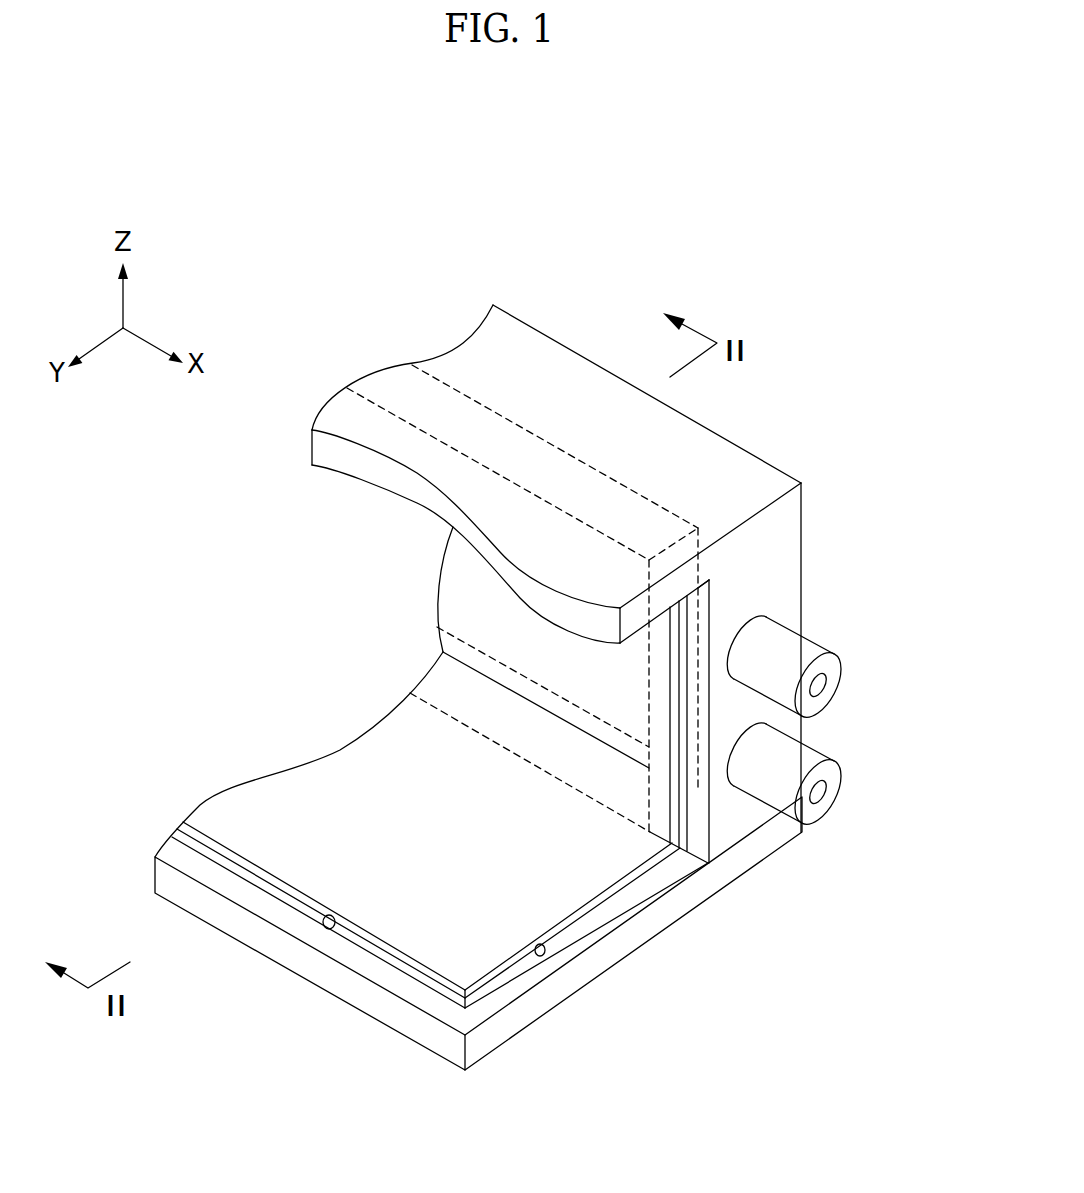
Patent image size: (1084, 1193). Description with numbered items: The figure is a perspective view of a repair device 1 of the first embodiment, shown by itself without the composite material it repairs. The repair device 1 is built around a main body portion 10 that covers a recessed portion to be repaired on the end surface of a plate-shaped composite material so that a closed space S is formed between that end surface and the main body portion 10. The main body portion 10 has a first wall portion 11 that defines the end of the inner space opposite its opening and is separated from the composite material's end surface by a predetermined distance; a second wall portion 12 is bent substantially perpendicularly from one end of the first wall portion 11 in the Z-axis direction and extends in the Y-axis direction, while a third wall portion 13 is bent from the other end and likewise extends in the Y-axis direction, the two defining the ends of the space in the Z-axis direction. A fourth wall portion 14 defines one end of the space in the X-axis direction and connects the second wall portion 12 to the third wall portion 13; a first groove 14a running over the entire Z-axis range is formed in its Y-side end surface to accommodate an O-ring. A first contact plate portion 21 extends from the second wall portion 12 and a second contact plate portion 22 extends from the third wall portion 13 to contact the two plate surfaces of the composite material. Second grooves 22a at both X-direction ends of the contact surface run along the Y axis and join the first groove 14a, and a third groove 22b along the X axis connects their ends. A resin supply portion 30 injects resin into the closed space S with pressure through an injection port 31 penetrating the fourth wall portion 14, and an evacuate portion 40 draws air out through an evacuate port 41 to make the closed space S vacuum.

The repair device 1 is at (537, 216).
The main body portion 10 is at (586, 300).
The first wall portion 11 is at (737, 445).
The second wall portion 12 is at (585, 385).
The third wall portion 13 is at (437, 678).
The fourth wall portion 14 is at (790, 540).
The first groove 14a is at (688, 626).
The first contact plate portion 21 is at (318, 448).
The second contact plate portion 22 is at (617, 952).
The second groove 22a is at (541, 955).
The third groove 22b is at (330, 930).
The resin supply portion 30 is at (885, 641).
The injection port 31 is at (833, 665).
The evacuate portion 40 is at (885, 766).
The evacuate port 41 is at (815, 810).
The closed space S is at (452, 575).